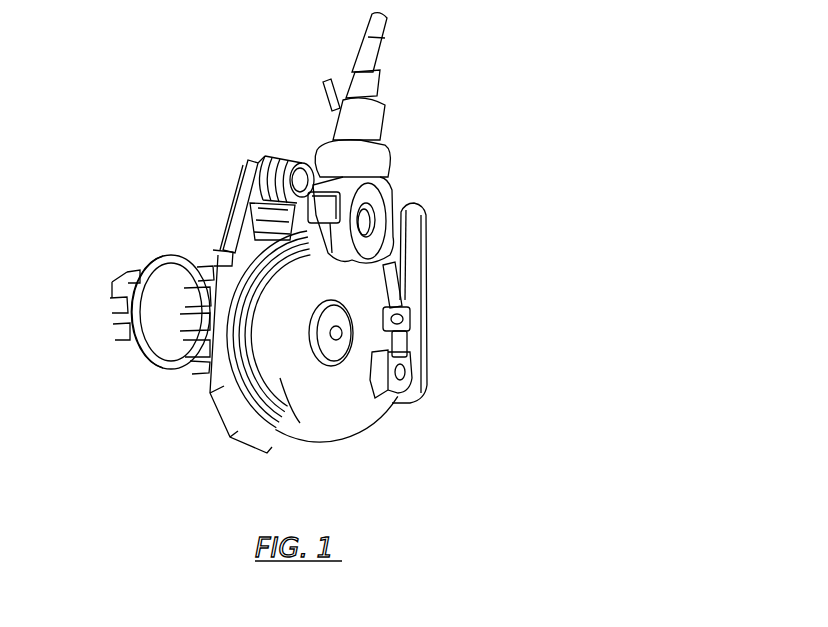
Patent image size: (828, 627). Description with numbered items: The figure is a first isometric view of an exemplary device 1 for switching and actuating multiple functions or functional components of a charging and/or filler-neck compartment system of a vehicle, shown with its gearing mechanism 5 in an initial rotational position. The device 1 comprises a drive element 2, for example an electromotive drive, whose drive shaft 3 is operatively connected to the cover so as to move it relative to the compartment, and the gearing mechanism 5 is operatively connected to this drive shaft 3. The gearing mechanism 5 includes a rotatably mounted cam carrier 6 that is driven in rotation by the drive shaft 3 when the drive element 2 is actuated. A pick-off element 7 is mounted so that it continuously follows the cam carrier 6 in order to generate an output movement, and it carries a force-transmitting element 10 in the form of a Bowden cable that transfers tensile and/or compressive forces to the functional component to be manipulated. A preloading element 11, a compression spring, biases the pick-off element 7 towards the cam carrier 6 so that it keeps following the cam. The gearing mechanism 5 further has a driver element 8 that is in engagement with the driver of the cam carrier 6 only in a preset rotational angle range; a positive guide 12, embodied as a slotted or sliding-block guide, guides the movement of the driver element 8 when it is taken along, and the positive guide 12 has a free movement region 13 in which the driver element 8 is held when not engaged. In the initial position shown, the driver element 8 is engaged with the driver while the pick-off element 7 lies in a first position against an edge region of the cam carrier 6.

The device 1 is at (611, 116).
The drive element 2 is at (180, 290).
The drive shaft 3 is at (112, 280).
The gearing mechanism 5 is at (472, 258).
The cam carrier 6 is at (303, 392).
The pick-off element 7 is at (365, 223).
The driver element 8 is at (397, 323).
The force-transmitting element 10 is at (365, 58).
The preloading element 11 is at (262, 157).
The positive guide 12 is at (402, 333).
The free movement region 13 is at (400, 378).